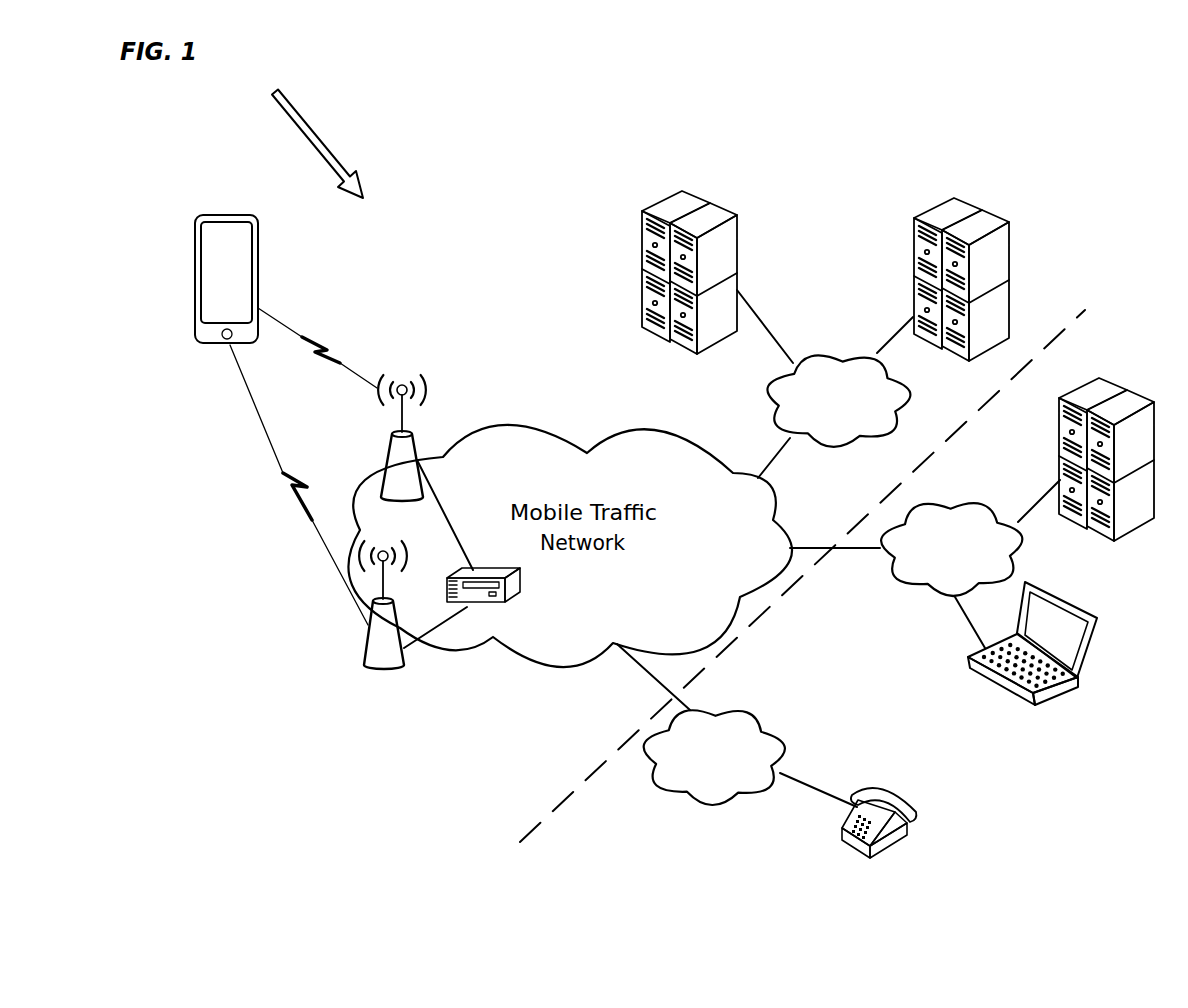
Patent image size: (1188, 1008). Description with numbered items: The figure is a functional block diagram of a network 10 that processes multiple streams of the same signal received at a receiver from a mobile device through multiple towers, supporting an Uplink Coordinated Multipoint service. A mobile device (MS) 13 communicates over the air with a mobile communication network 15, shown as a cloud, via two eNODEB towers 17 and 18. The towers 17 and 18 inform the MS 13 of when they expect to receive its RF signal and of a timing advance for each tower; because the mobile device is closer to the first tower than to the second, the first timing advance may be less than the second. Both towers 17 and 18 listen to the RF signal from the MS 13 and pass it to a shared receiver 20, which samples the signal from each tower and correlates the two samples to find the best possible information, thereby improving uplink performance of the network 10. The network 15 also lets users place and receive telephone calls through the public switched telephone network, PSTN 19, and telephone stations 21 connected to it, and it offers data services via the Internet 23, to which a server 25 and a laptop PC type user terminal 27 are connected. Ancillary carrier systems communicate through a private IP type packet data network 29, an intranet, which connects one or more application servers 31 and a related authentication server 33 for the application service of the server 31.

The network 10 is at (306, 136).
The mobile device (MS) 13 is at (193, 262).
The mobile communication network 15 is at (478, 433).
The tower (eNODEB) 17 is at (390, 452).
The tower (eNODEB) 18 is at (405, 660).
The public switched telephone network (PSTN) 19 is at (787, 739).
The receiver 20 is at (523, 600).
The telephone station 21 is at (842, 840).
The Internet 23 is at (900, 585).
The server 25 is at (1057, 460).
The laptop PC type user terminal 27 is at (1000, 688).
The private IP type packet data network 29 is at (912, 410).
The application server 31 is at (737, 227).
The authentication server 33 is at (1008, 283).